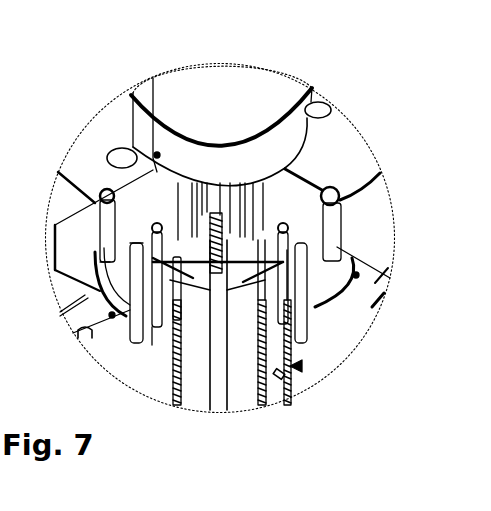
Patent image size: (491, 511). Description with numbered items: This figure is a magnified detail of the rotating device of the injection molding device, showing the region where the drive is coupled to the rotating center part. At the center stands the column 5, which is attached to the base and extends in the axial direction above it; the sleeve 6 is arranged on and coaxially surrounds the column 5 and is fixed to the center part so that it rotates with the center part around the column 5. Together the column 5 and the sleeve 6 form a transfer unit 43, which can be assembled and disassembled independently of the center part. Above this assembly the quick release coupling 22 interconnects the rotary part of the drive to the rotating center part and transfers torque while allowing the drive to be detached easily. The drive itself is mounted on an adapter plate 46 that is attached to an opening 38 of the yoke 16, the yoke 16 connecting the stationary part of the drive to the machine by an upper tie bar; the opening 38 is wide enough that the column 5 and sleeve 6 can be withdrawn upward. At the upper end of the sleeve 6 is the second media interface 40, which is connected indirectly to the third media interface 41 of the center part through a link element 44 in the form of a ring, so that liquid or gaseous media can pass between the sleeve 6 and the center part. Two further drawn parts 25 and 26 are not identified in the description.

The top disc 25 is at (185, 100).
The ring 26 is at (147, 133).
The opening 38 is at (80, 197).
The quick release coupling 22 is at (57, 175).
The link element 44 is at (78, 313).
The sleeve 6 is at (150, 363).
The adapter plate 46 is at (320, 147).
The second media interface 40 is at (324, 186).
The yoke 16 is at (350, 212).
The third media interface 41 is at (382, 181).
The column 5 is at (245, 344).
The transfer unit 43 is at (302, 367).